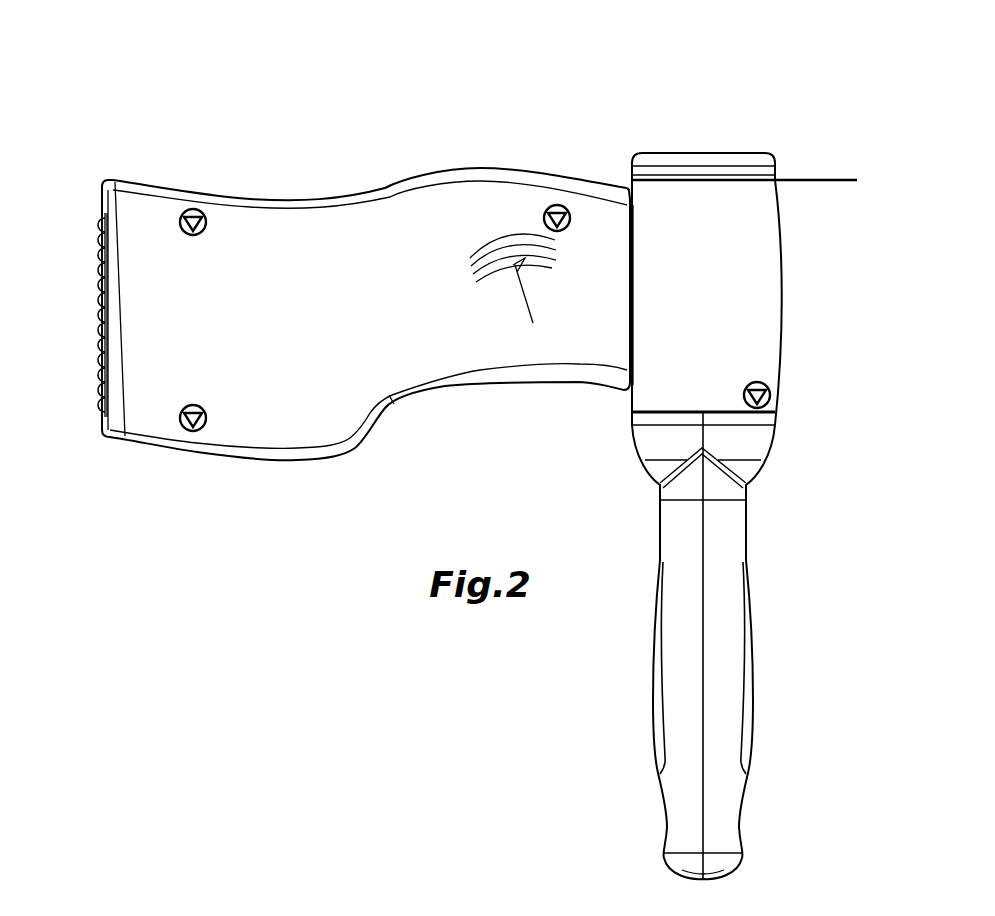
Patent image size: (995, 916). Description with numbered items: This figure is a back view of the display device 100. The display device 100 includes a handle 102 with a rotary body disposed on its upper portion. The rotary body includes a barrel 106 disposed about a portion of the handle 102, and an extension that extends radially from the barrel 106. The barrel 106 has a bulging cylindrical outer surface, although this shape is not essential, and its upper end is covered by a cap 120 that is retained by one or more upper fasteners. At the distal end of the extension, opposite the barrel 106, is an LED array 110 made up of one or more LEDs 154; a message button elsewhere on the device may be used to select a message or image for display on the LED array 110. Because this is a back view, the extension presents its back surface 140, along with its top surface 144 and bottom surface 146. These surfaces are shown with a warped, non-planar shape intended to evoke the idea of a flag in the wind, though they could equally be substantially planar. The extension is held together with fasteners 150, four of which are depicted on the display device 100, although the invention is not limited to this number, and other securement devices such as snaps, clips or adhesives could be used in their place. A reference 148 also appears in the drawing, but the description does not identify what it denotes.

The display device 100 is at (530, 90).
The handle 102 is at (728, 658).
The barrel 106 is at (758, 312).
The LED array 110 is at (89, 217).
The cap 120 is at (702, 155).
The back surface 140 is at (313, 235).
The top surface 144 is at (260, 190).
The bottom surface 146 is at (372, 440).
The housing body 148 is at (748, 243).
The fasteners 150 is at (194, 209).
The LEDs 154 is at (98, 235).